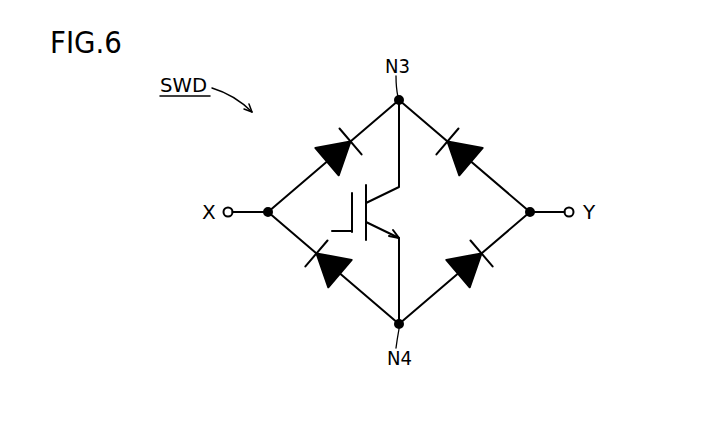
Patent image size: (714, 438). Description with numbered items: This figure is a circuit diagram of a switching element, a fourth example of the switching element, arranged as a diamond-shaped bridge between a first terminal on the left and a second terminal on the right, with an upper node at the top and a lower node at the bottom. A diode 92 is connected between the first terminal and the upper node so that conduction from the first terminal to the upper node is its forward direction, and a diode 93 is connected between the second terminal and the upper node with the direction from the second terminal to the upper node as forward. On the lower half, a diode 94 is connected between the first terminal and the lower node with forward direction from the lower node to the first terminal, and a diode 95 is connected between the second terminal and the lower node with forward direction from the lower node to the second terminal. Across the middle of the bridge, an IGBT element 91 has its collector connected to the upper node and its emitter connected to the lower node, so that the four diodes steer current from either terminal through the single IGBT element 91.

The IGBT element 91 is at (346, 214).
The diode 92 is at (335, 140).
The diode 93 is at (463, 140).
The diode 94 is at (320, 268).
The diode 95 is at (480, 268).